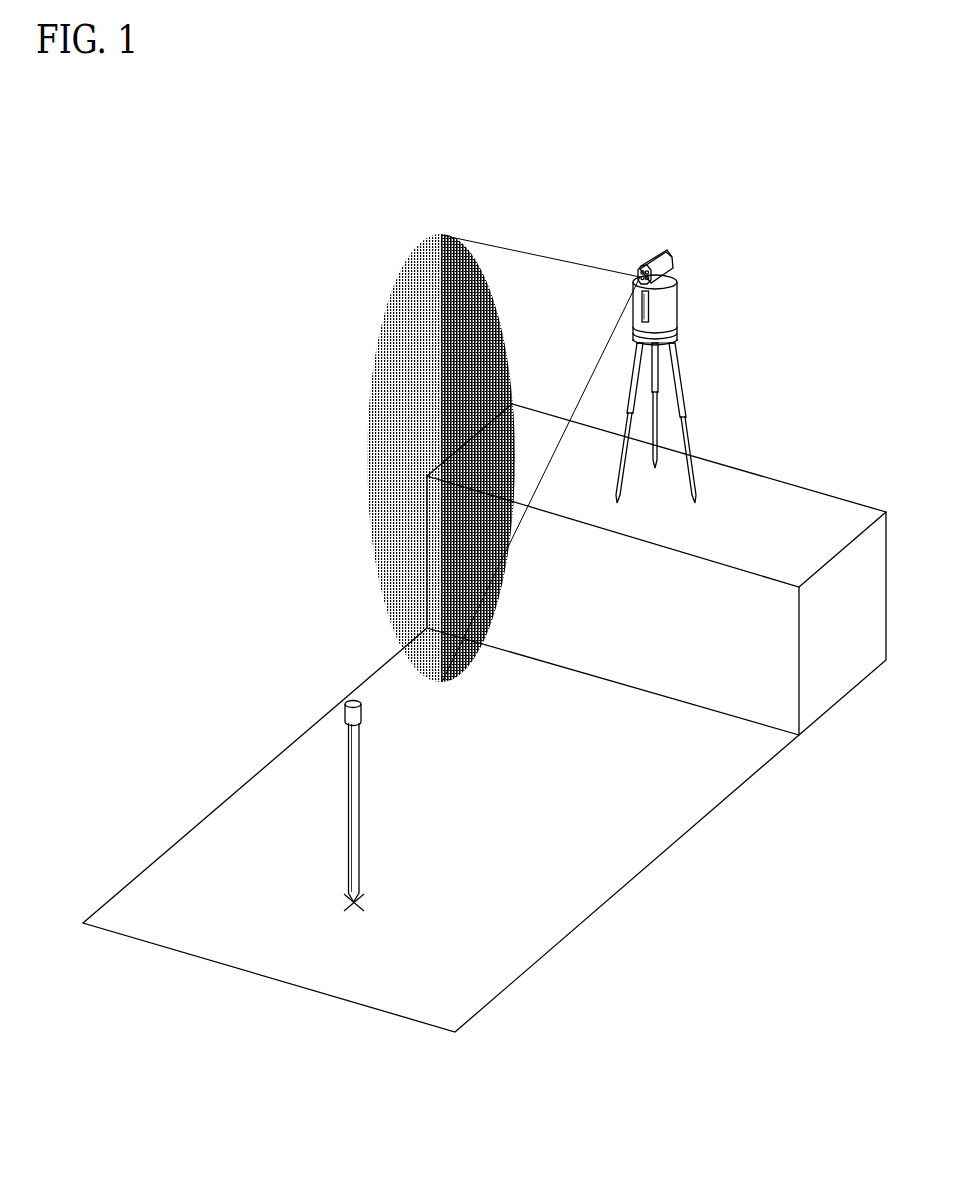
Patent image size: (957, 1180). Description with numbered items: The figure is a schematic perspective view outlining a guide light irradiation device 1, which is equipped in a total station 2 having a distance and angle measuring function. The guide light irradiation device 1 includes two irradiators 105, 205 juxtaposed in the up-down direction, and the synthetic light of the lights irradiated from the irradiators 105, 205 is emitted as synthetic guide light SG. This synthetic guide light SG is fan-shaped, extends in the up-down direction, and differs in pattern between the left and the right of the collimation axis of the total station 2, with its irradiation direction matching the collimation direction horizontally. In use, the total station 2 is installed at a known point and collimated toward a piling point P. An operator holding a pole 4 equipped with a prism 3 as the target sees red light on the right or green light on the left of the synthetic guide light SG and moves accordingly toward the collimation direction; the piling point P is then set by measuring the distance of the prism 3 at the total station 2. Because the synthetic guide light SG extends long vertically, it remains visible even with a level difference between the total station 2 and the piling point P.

The guide light irradiation device 1 is at (730, 281).
The irradiator 105 is at (667, 254).
The irradiator 205 is at (673, 270).
The total station 2 is at (692, 332).
The prism 3 is at (363, 712).
The pole 4 is at (362, 796).
The synthetic guide light SG is at (350, 436).
The piling point P is at (366, 901).